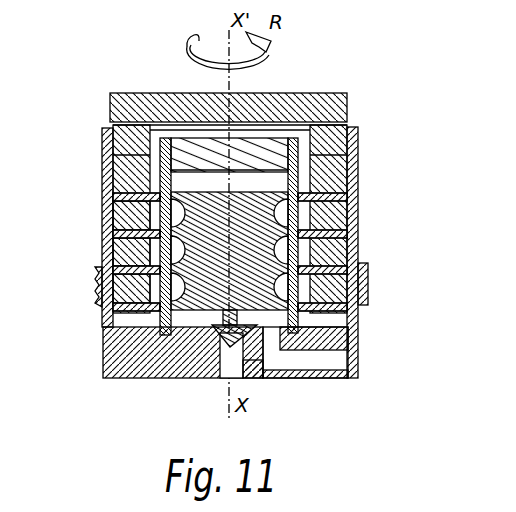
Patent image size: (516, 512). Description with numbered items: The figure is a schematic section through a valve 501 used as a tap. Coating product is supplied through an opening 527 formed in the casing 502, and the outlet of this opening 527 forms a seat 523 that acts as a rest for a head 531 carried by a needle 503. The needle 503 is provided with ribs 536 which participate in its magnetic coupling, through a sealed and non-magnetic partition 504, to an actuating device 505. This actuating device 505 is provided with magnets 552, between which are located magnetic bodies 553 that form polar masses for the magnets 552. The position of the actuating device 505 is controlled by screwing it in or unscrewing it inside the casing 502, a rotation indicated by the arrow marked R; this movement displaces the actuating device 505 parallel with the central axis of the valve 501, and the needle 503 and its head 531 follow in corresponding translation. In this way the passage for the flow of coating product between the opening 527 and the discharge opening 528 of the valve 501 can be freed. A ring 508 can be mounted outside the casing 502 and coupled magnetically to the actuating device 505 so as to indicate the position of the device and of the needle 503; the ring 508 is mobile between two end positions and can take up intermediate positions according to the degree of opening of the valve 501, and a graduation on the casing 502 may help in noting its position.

The valve 501 is at (364, 117).
The actuating device 505 is at (300, 107).
The sealed and non-magnetic partition 504 is at (357, 157).
The needle 503 is at (353, 212).
The ribs 536 is at (115, 213).
The magnetic bodies 553 is at (115, 243).
The magnets 552 is at (358, 238).
The ring 508 is at (365, 278).
The seat 523 is at (258, 326).
The discharge opening 528 is at (325, 357).
The casing 502 is at (147, 371).
The opening 527 is at (227, 379).
The head 531 is at (243, 379).